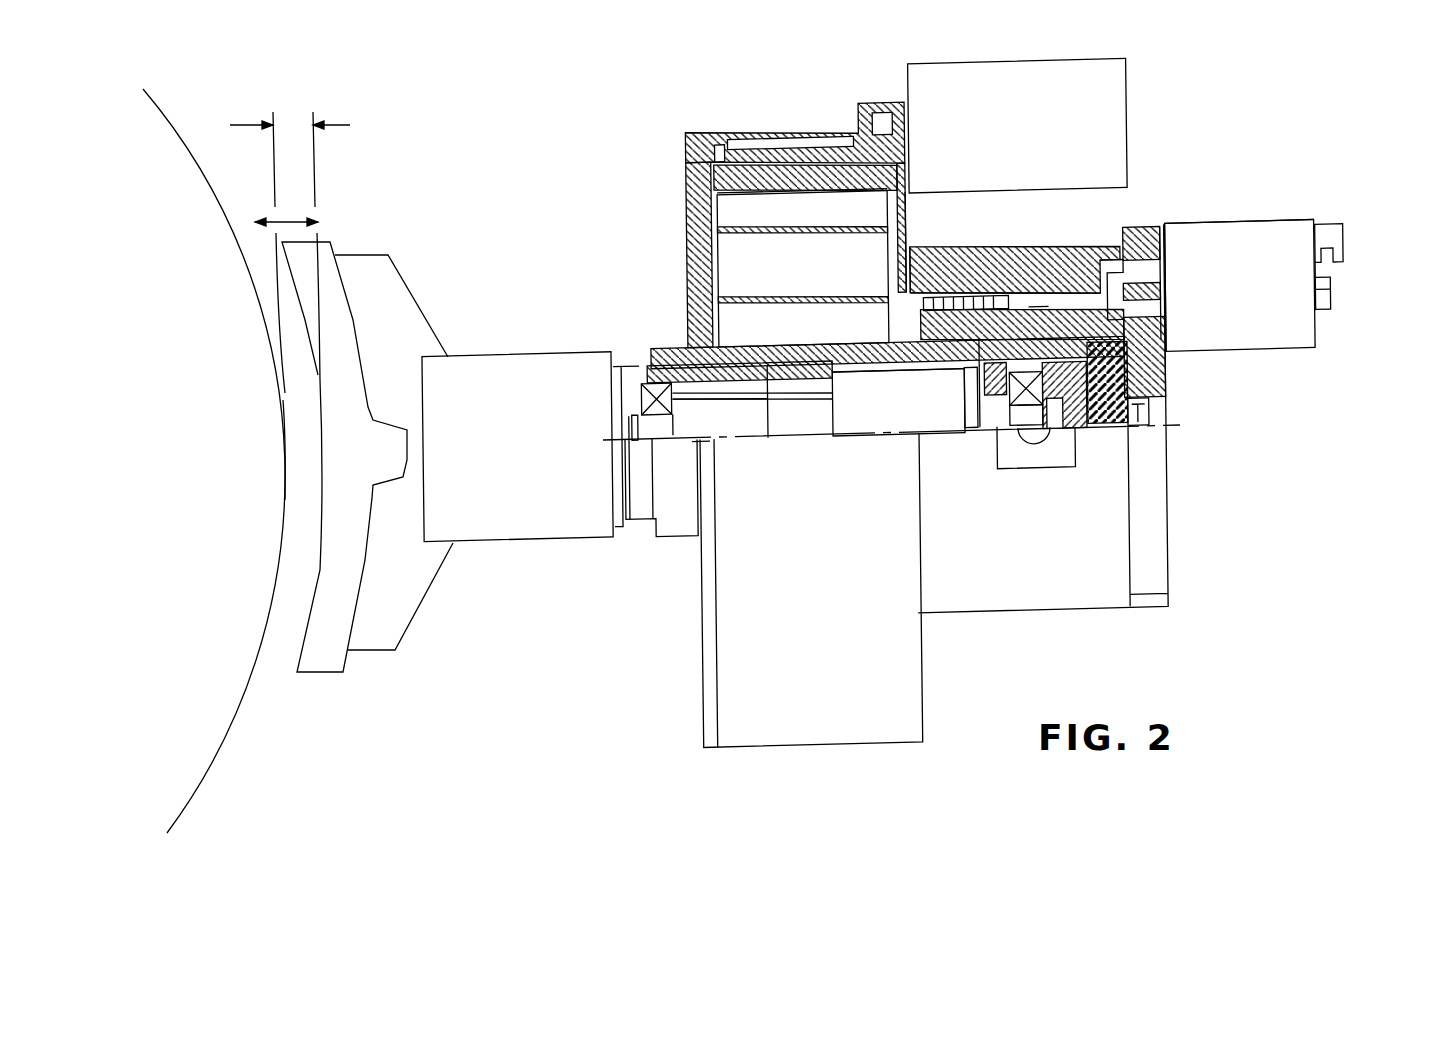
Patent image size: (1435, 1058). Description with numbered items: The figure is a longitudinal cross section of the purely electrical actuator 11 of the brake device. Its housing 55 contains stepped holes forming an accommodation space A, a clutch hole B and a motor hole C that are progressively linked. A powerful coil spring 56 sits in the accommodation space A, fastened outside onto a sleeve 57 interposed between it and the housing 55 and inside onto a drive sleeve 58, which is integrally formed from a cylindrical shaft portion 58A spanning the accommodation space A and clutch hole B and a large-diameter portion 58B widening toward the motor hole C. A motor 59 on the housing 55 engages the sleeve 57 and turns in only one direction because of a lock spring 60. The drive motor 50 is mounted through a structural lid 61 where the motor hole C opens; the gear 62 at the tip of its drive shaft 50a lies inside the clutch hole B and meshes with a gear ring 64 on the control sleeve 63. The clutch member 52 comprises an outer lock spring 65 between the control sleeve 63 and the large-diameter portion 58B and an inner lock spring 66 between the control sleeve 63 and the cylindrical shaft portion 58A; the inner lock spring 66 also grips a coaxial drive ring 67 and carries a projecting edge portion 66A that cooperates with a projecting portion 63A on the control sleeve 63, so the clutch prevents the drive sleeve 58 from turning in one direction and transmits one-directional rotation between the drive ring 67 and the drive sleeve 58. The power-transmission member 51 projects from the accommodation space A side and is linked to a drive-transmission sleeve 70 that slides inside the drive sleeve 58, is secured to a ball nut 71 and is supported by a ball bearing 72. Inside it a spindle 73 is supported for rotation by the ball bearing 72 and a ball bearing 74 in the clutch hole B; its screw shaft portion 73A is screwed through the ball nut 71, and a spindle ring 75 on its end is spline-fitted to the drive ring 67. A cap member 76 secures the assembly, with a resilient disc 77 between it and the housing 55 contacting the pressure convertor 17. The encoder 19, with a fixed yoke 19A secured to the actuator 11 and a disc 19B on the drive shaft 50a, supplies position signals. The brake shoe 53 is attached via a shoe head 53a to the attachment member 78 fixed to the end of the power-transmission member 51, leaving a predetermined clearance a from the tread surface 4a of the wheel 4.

The wheel 4 is at (197, 733).
The tread surface 4a is at (295, 485).
The actuator 11 is at (1208, 158).
The pressure convertor 17 is at (1167, 417).
The encoder 19 is at (1338, 211).
The fixed yoke 19A is at (1327, 235).
The disc 19B is at (1328, 310).
The drive motor 50 is at (1240, 245).
The drive shaft 50a is at (1157, 290).
The power-transmission member 51 is at (620, 523).
The clutch member 52 is at (923, 367).
The brake shoe 53 is at (320, 640).
The shoe head 53a is at (380, 625).
The housing 55 is at (747, 135).
The coil spring 56 is at (815, 140).
The sleeve 57 is at (785, 142).
The drive sleeve 58 is at (768, 432).
The cylindrical shaft portion 58A is at (807, 357).
The large-diameter portion 58B is at (888, 290).
The motor 59 is at (1097, 98).
The lock spring 60 is at (723, 135).
The structural lid 61 is at (1163, 283).
The gear 62 is at (1133, 303).
The control sleeve 63 is at (1060, 257).
The projecting portion 63A is at (933, 273).
The gear ring 64 is at (1117, 300).
The outer lock spring 65 is at (970, 307).
The inner lock spring 66 is at (990, 293).
The projecting edge portion 66A is at (918, 285).
The drive ring 67 is at (953, 387).
The drive-transmission sleeve 70 is at (655, 348).
The ball nut 71 is at (867, 423).
The ball bearing 72 is at (645, 383).
The spindle 73 is at (795, 413).
The screw shaft portion 73A is at (733, 425).
The ball bearing 74 is at (1015, 420).
The spindle ring 75 is at (993, 387).
The cap member 76 is at (1095, 415).
The resilient disc 77 is at (1122, 400).
The attachment member 78 is at (580, 540).
The accommodation space A is at (720, 208).
The clutch hole B is at (1038, 313).
The motor hole C is at (1130, 237).
The clearance a is at (330, 124).